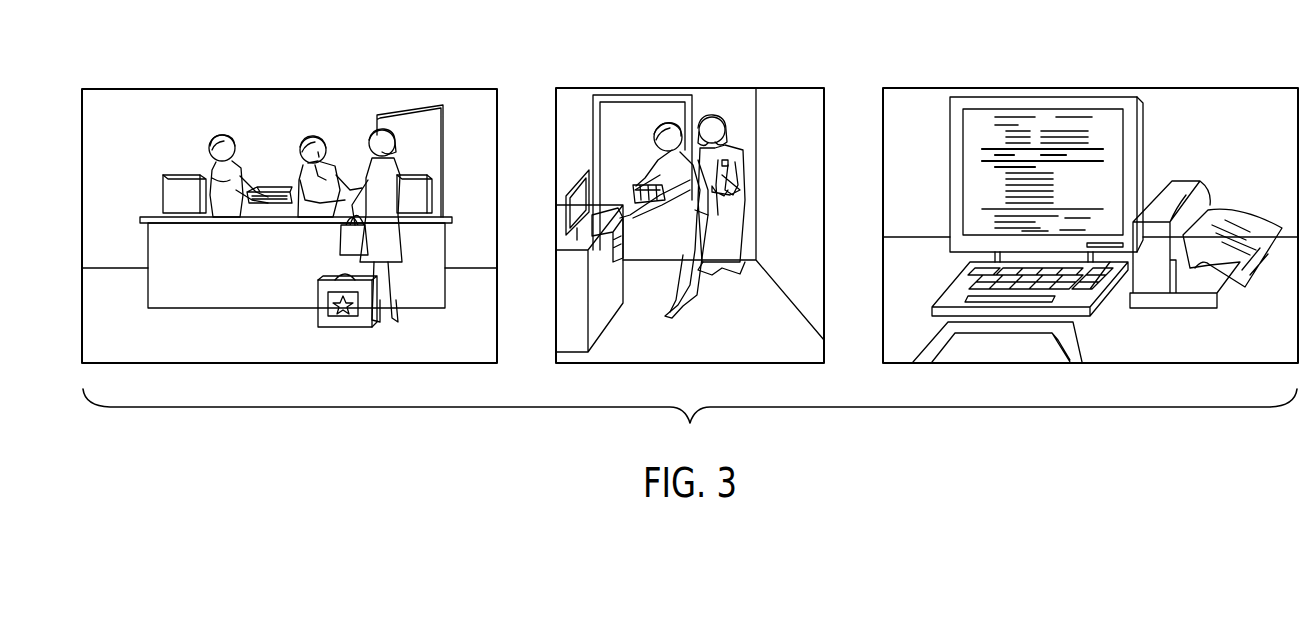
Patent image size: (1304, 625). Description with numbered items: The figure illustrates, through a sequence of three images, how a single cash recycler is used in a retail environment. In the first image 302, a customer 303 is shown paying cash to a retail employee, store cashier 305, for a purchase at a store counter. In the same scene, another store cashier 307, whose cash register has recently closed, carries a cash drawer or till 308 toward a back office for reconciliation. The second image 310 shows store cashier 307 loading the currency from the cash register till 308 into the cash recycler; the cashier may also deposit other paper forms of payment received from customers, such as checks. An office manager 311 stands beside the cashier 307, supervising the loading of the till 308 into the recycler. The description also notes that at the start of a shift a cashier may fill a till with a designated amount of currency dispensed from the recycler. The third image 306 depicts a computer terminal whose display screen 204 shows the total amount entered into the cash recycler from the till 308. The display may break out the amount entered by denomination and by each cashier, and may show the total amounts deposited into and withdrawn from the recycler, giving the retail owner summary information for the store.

The image 302 is at (115, 108).
The customer 303 is at (400, 247).
The store cashier 305 is at (307, 135).
The store cashier 307 is at (218, 130).
The cash drawer or till 308 is at (280, 200).
The image 310 is at (780, 105).
The office manager 311 is at (723, 197).
The image 306 is at (1230, 100).
The display screen 204 is at (985, 125).